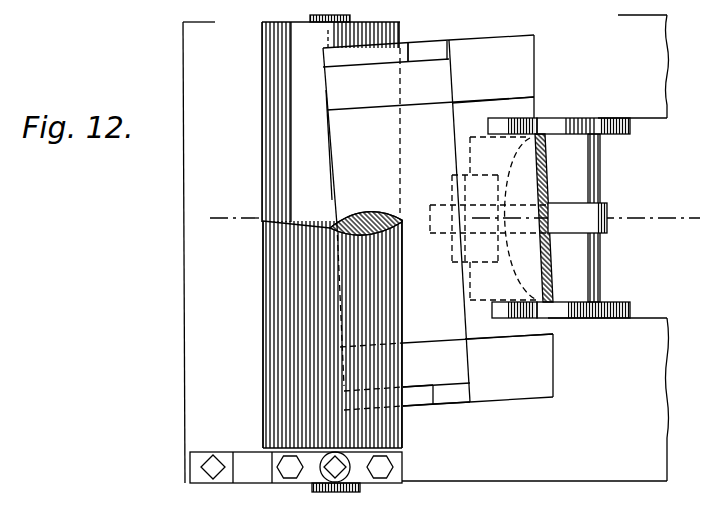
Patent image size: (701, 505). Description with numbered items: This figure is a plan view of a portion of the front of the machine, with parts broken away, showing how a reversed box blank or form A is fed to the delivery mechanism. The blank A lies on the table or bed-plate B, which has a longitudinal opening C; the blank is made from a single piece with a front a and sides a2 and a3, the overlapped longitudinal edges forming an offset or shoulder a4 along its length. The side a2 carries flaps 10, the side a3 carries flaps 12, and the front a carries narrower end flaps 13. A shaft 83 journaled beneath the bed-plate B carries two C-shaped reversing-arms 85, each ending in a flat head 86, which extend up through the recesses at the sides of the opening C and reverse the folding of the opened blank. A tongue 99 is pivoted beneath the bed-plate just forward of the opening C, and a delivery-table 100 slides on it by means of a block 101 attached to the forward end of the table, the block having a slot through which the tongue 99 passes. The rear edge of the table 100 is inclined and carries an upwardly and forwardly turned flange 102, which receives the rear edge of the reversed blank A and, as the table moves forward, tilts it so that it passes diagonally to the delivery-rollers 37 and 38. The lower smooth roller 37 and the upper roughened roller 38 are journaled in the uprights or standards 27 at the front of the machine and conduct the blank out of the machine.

The flaps 10 is at (501, 218).
The flaps 12 is at (427, 408).
The end flaps 13 is at (445, 223).
The uprights 27 is at (305, 476).
The roller 37 is at (278, 93).
The roller 38 is at (276, 356).
The shaft 83 is at (601, 192).
The reversing-arms 85 is at (566, 124).
The flat head 86 is at (512, 218).
The tongue 99 is at (585, 228).
The delivery-table 100 is at (521, 219).
The block 101 is at (489, 218).
The flange 102 is at (557, 168).
The box blank or form A is at (396, 223).
The table B is at (426, 249).
The longitudinal opening C is at (664, 141).
The front a is at (333, 196).
The side a2 is at (493, 109).
The side a3 is at (386, 54).
The offset or shoulder a4 is at (450, 420).